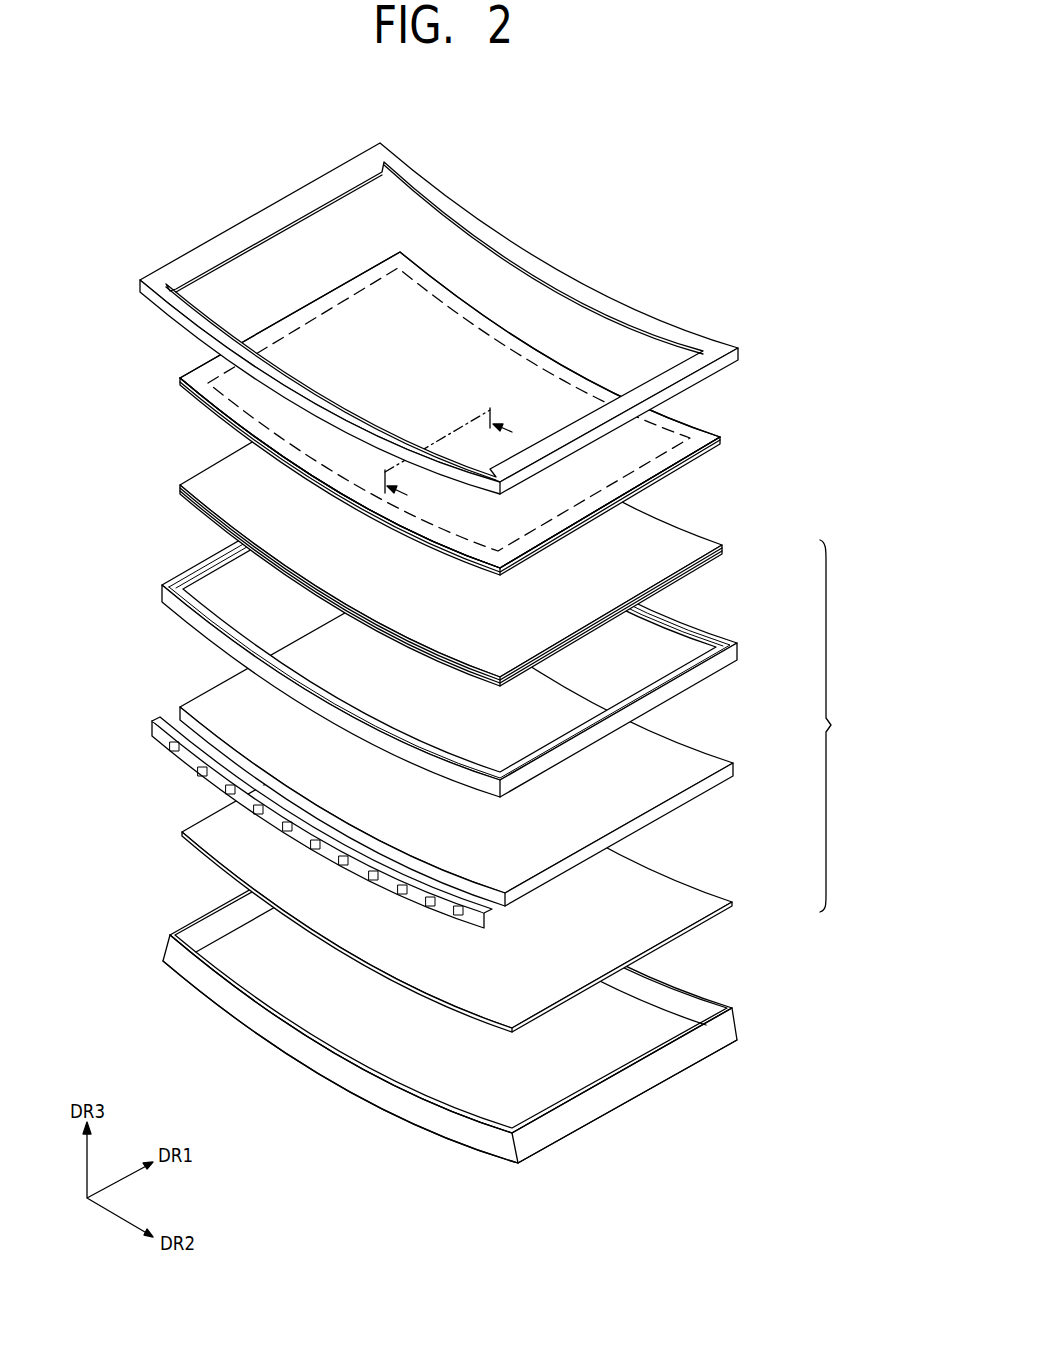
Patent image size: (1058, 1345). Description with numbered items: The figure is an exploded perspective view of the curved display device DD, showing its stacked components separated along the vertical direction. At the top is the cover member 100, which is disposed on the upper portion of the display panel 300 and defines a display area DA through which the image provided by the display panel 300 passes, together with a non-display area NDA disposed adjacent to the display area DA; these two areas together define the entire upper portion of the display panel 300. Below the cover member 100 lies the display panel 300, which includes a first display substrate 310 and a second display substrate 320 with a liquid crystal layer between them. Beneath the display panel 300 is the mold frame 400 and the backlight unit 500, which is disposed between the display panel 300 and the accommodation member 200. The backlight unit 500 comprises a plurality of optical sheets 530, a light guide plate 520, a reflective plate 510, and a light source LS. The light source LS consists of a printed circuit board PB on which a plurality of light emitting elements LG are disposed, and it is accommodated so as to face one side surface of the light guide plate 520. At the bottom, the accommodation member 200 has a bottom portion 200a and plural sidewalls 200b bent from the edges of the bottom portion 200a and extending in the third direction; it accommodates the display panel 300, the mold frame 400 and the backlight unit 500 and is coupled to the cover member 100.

The cover member 100 is at (553, 270).
The accommodation member 200 is at (489, 986).
The bottom portion 200a is at (570, 1075).
The sidewall 200b is at (330, 1070).
The display panel 300 is at (451, 413).
The first display substrate 310 is at (214, 420).
The second display substrate 320 is at (190, 397).
The mold frame 400 is at (200, 625).
The backlight unit 500 is at (846, 726).
The reflective plate 510 is at (732, 900).
The light guide plate 520 is at (734, 766).
The optical sheets 530 is at (722, 545).
The display area DA is at (668, 442).
The non-display area NDA is at (721, 437).
The curved display device DD is at (686, 222).
The light source LS is at (291, 822).
The printed circuit board PB is at (158, 735).
The light emitting element LG is at (198, 770).